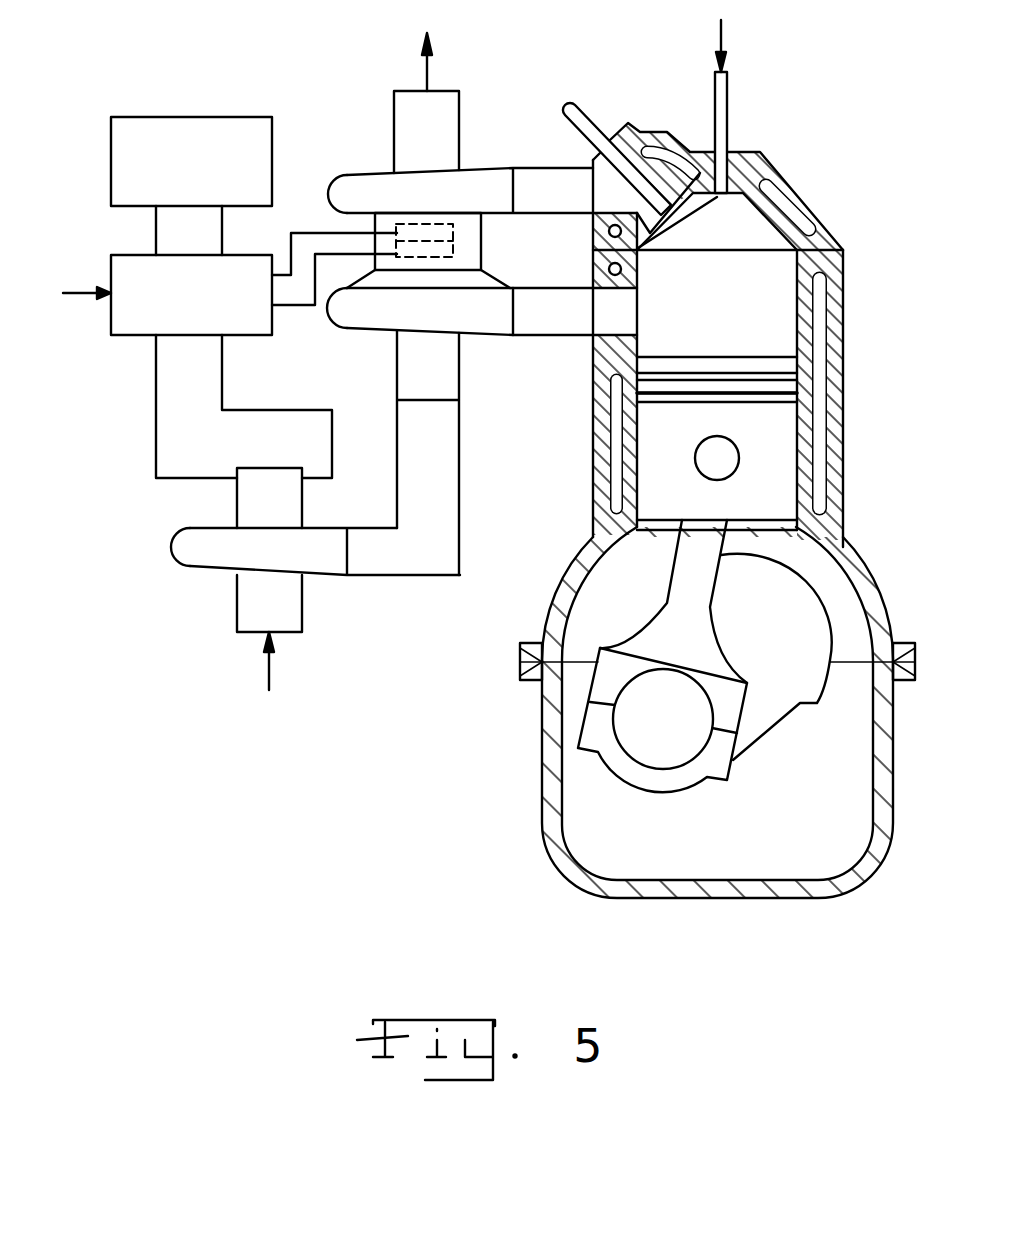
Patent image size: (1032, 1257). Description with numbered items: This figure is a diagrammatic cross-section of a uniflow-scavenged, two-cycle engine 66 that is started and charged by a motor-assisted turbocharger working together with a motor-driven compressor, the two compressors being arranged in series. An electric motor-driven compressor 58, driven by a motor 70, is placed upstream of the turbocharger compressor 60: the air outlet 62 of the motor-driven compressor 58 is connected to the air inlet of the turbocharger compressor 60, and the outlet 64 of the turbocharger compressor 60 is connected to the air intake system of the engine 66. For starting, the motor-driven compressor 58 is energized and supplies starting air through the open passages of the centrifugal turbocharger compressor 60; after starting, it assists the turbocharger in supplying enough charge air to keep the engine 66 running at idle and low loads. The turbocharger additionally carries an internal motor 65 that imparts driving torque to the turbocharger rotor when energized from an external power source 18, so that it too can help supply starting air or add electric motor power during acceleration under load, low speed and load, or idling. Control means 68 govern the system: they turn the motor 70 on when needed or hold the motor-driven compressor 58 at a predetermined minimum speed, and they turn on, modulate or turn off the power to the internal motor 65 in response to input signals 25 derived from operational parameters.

The external power source 18 is at (202, 175).
The control means 68 is at (204, 310).
The input signals 25 is at (85, 299).
The internal motor 65 is at (455, 248).
The two-cycle engine 66 is at (855, 303).
The turbocharger compressor 60 is at (485, 320).
The outlet 64 is at (565, 323).
The motor 70 is at (243, 503).
The motor-driven compressor 58 is at (200, 563).
The air outlet 62 is at (398, 566).